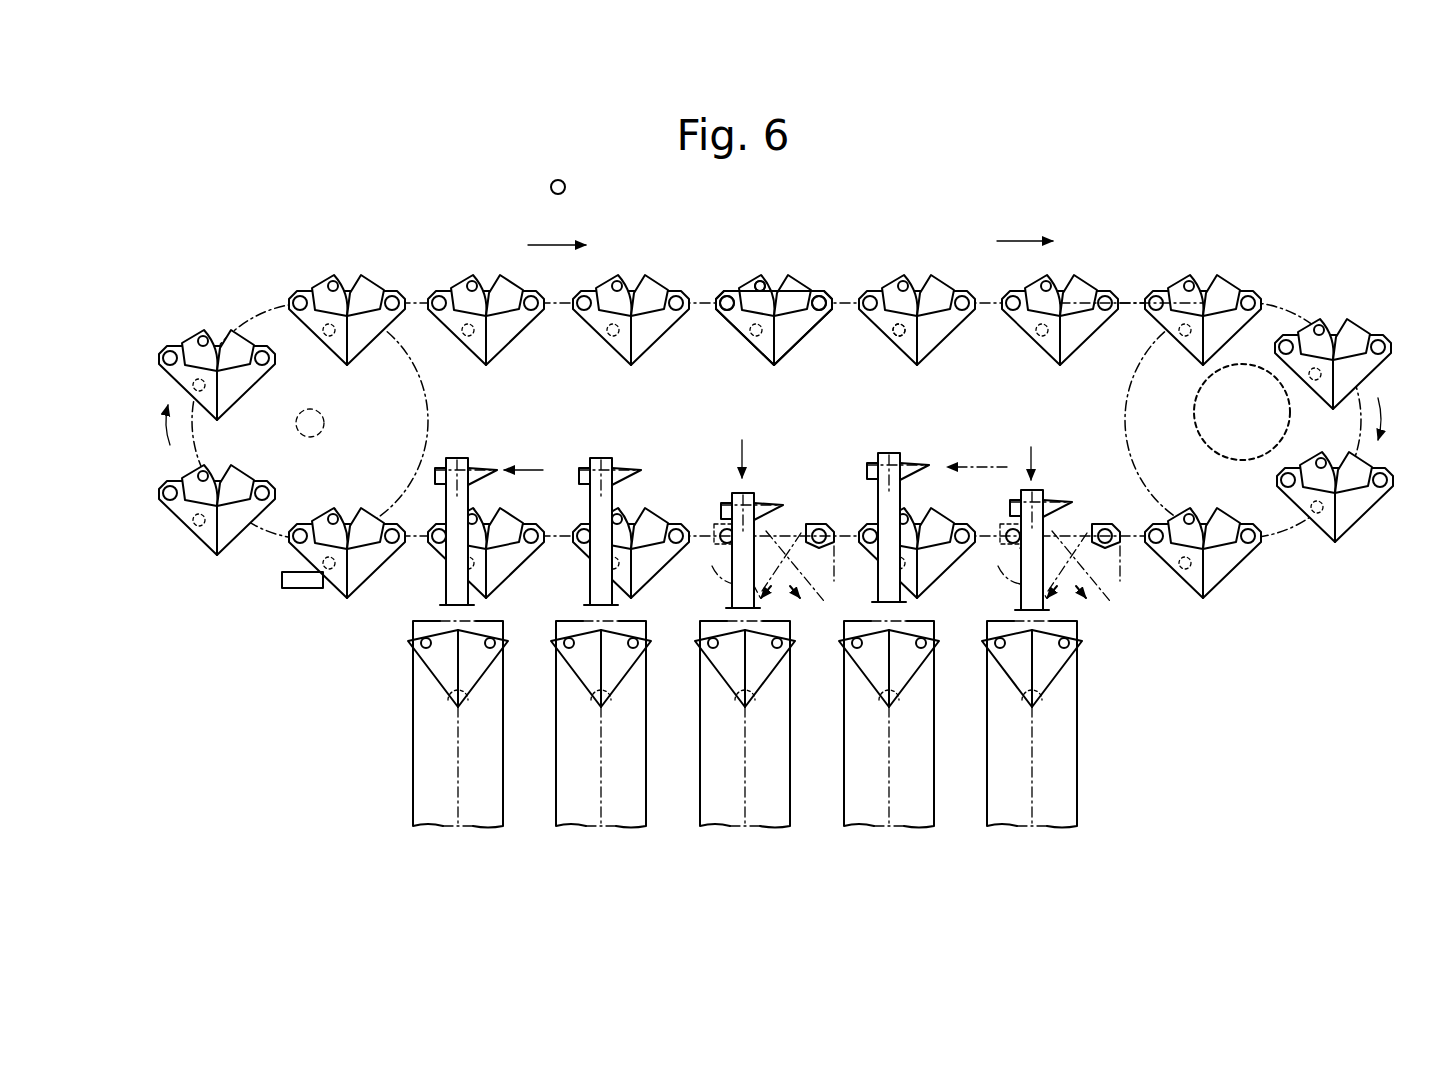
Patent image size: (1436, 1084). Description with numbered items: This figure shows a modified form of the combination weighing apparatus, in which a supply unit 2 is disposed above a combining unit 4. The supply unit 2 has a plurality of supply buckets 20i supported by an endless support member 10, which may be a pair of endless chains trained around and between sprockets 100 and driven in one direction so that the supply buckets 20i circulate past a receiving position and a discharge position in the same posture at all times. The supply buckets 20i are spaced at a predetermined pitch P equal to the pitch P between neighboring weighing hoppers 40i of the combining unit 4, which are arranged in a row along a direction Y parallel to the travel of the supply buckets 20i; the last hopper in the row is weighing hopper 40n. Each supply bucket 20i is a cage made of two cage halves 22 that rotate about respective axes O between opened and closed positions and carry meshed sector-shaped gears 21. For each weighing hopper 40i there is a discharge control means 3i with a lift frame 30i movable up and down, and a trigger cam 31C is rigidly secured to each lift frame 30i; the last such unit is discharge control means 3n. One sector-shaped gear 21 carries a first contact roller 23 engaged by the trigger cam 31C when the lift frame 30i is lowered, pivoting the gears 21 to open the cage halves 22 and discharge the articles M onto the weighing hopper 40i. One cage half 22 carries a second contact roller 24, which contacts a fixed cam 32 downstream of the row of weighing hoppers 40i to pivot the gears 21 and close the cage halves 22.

The supply unit 2 is at (1129, 252).
The combining unit 4 is at (725, 724).
The endless support member 10 is at (695, 296).
The supply bucket 20i is at (760, 338).
The sector-shaped gear 21 is at (758, 288).
The cage half 22 is at (777, 360).
The first contact roller 23 is at (622, 512).
The second contact roller 24 is at (893, 340).
The discharge control means 3i is at (922, 503).
The n-th pusher 3n is at (1045, 490).
The lift frame 30i is at (769, 516).
The trigger cam 31C is at (823, 413).
The fixed cam 32 is at (313, 589).
The weighing hopper 40i is at (758, 672).
The n-th container 40n is at (1047, 673).
The sprocket 100 is at (1288, 528).
The axis O is at (729, 297).
The articles M is at (617, 246).
The pitch P is at (485, 275).
The direction Y is at (699, 882).